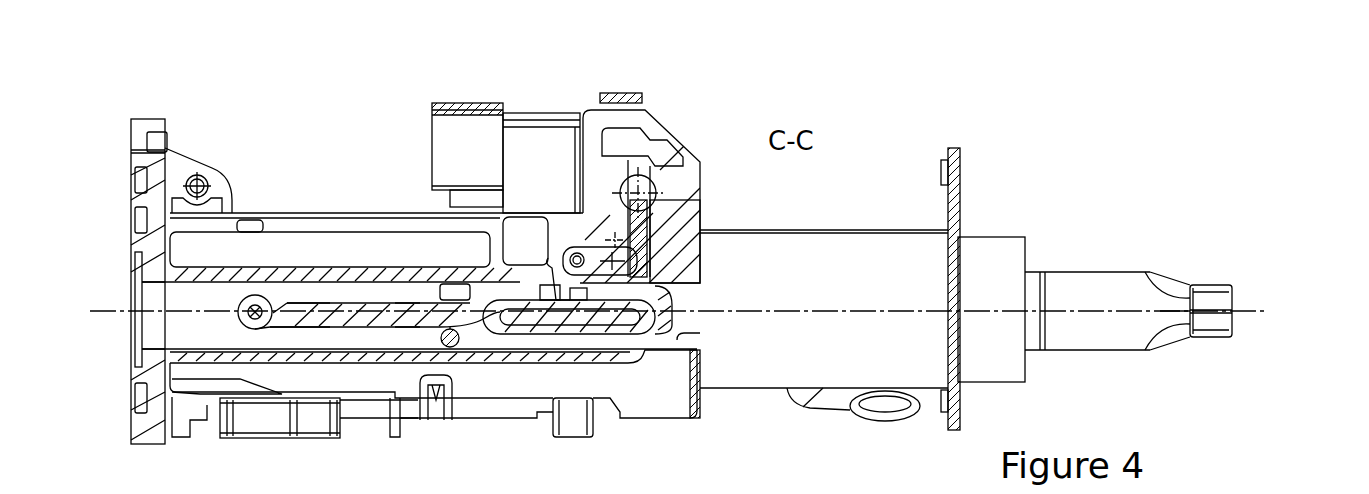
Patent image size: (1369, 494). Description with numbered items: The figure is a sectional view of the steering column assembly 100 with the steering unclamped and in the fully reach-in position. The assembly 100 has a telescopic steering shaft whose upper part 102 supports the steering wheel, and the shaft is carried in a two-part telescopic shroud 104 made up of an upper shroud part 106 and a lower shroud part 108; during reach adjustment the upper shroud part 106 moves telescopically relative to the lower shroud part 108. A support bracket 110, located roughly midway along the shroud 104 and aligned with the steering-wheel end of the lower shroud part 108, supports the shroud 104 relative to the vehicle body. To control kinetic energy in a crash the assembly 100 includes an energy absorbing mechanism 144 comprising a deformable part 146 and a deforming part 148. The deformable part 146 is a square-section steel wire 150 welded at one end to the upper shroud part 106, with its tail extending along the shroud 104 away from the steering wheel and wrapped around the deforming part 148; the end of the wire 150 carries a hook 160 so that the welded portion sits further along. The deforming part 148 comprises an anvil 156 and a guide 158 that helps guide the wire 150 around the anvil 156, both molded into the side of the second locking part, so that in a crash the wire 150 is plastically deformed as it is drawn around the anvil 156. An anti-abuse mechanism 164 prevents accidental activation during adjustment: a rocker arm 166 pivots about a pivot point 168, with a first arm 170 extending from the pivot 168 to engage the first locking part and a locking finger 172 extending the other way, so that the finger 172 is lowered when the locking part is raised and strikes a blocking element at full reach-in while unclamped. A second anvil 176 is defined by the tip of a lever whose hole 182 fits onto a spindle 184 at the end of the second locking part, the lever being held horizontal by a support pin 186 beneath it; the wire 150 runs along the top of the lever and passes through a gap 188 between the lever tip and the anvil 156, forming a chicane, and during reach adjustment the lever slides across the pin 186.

The steering column assembly 100 is at (1231, 122).
The upper part of steering shaft 102 is at (1213, 281).
The telescopic shroud 104 is at (838, 184).
The upper shroud part 106 is at (1008, 234).
The lower shroud part 108 is at (315, 210).
The support bracket 110 is at (650, 108).
The energy absorbing mechanism 144 is at (515, 354).
The deformable part 146 is at (375, 323).
The deforming part 148 is at (604, 323).
The wire 150 is at (407, 323).
The anvil 156 is at (583, 328).
The guide 158 is at (697, 340).
The hook 160 is at (651, 281).
The anti-abuse mechanism 164 is at (577, 225).
The rocker arm 166 is at (563, 243).
The pivot point 168 is at (563, 258).
The first arm 170 is at (600, 242).
The locking finger 172 is at (553, 296).
The second anvil 176 is at (297, 334).
The hole 182 is at (248, 292).
The spindle 184 is at (239, 317).
The support pin 186 is at (443, 322).
The gap 188 is at (453, 292).